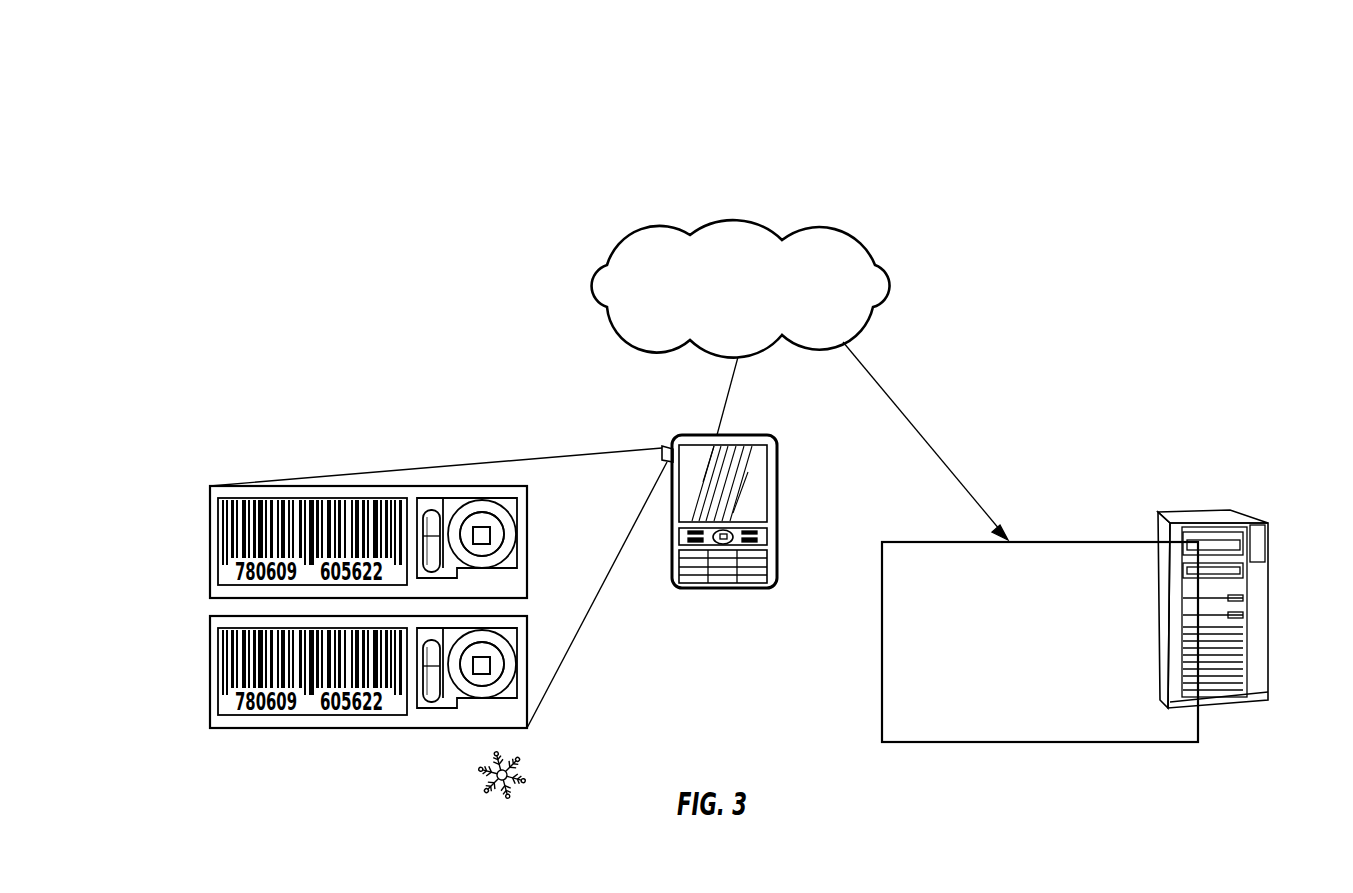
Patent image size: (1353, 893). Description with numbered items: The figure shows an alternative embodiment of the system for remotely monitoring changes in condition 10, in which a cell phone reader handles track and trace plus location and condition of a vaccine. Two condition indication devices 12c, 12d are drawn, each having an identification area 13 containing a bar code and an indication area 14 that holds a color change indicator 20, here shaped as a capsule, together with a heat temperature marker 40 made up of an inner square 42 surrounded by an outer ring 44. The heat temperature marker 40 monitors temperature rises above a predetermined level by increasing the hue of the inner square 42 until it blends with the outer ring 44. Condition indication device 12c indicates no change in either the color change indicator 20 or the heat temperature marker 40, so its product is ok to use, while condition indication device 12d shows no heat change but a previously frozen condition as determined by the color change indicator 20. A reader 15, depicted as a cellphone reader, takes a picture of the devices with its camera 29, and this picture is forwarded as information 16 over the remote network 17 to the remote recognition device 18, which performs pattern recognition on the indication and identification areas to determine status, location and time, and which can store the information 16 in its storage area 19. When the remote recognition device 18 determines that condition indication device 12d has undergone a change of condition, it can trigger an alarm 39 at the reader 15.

The system for remotely monitoring changes in condition 10 is at (770, 40).
The condition indication device 12c is at (208, 535).
The condition indication device 12d is at (210, 662).
The identification area 13 is at (260, 490).
The indication area 14 is at (478, 463).
The reader 15 is at (738, 448).
The information 16 is at (623, 455).
The remote network 17 is at (800, 380).
The remote recognition device 18 is at (985, 737).
The storage area 19 is at (1228, 703).
The color change indicator 20 is at (432, 510).
The camera 29 is at (757, 507).
The alarm 39 is at (760, 518).
The heat temperature marker 40 is at (499, 511).
The inner square 42 is at (490, 536).
The outer ring 44 is at (504, 526).